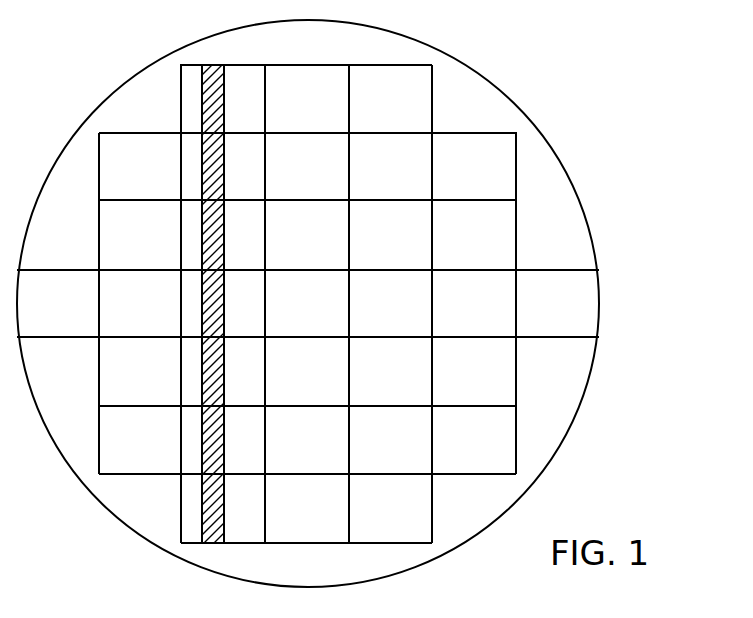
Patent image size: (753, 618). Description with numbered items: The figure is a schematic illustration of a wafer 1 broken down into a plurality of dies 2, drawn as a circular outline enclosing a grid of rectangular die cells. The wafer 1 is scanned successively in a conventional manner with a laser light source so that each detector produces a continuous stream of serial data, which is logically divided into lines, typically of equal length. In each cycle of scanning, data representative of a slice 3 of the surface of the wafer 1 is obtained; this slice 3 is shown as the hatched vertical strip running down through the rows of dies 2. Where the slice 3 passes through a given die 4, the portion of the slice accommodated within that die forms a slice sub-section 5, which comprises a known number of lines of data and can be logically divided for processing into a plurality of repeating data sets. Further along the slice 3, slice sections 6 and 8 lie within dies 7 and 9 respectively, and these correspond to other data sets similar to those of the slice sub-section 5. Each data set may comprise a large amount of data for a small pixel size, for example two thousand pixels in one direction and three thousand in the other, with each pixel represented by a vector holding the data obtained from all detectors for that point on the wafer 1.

The wafer 1 is at (478, 72).
The dies 2 is at (494, 150).
The slice 3 is at (212, 72).
The die 4 is at (247, 75).
The slice sub-section 5 is at (202, 77).
The slice section 6 is at (211, 183).
The die 7 is at (248, 167).
The slice section 8 is at (203, 245).
The die 9 is at (248, 242).